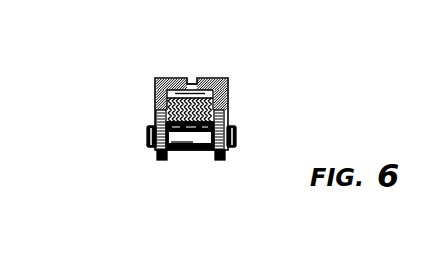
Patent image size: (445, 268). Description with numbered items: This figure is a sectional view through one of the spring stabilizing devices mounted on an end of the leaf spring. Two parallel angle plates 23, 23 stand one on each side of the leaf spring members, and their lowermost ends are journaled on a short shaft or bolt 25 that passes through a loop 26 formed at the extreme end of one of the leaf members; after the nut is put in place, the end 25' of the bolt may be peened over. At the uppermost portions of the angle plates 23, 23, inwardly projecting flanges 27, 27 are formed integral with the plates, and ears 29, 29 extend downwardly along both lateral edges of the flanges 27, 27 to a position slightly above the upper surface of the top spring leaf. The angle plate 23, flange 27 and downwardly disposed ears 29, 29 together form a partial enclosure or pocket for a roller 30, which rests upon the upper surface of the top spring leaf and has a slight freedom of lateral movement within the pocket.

The angle plate 23 is at (155, 99).
The short shaft or bolt 25 is at (132, 136).
The end of the bolt 25' is at (253, 134).
The loop 26 is at (207, 145).
The inwardly projecting flange 27 is at (174, 78).
The ear 29 is at (155, 90).
The roller 30 is at (200, 92).